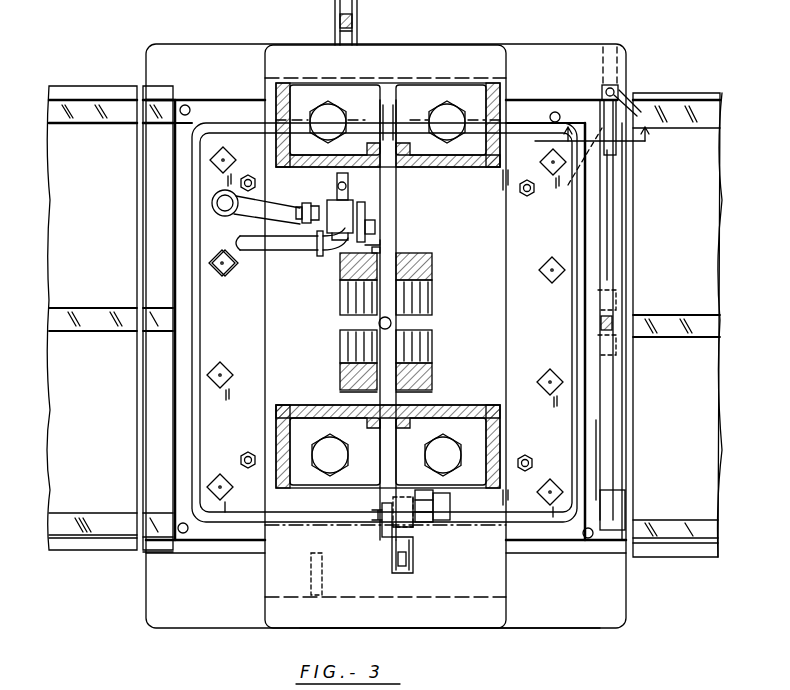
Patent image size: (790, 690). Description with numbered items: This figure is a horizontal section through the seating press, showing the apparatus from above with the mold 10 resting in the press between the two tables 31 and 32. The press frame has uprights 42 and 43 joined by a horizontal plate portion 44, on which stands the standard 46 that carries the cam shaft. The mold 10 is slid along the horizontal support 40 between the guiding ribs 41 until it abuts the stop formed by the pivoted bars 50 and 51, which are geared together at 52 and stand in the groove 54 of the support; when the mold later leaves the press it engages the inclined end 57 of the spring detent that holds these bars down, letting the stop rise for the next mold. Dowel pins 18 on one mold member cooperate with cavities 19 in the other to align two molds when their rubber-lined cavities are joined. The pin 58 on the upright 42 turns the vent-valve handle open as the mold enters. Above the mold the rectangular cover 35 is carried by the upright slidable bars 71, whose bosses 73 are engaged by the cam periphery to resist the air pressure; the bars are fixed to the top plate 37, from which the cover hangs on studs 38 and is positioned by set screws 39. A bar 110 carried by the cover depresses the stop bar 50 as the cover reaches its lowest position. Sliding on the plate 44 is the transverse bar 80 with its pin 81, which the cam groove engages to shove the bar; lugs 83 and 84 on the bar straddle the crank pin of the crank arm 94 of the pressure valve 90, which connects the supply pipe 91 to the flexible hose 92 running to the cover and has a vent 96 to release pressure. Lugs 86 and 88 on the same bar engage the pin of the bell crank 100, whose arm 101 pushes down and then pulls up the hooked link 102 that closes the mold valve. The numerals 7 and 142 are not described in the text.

The mold 10 is at (173, 158).
The dowel pins 18 is at (188, 104).
The cavities 19 is at (183, 534).
The table 31 is at (92, 318).
The table 32 is at (677, 325).
The mold cover 35 is at (190, 372).
The top plate 37 is at (551, 244).
The studs 38 is at (244, 457).
The set screws 39 is at (224, 372).
The horizontal support 40 is at (598, 397).
The guiding ribs 41 is at (163, 95).
The upright 42 is at (452, 630).
The upright 43 is at (447, 43).
The horizontal plate portion 44 is at (374, 288).
The standard 46 is at (455, 167).
The stop bar 50 is at (610, 208).
The stop bar 51 is at (606, 438).
The gearing 52 is at (612, 330).
The groove 54 is at (602, 100).
The inclined end 57 is at (632, 118).
The stationary pin 58 is at (305, 572).
The section line 7 is at (598, 130).
The slidable bars 71 is at (432, 271).
The bosses 73 is at (415, 298).
The transverse bar 80 is at (377, 216).
The pin 81 is at (392, 323).
The lug 83 is at (382, 246).
The lug 84 is at (376, 226).
The lug 86 is at (380, 508).
The lug 88 is at (385, 537).
The pressure valve 90 is at (325, 205).
The supply pipe 91 is at (230, 270).
The flexible hose 92 is at (245, 252).
The crank arm 94 is at (362, 212).
The vent 96 is at (349, 206).
The bell crank 100 is at (425, 518).
The arm 101 is at (415, 556).
The hooked link 102 is at (408, 572).
The bar 110 is at (571, 160).
The rod 142 is at (338, 12).